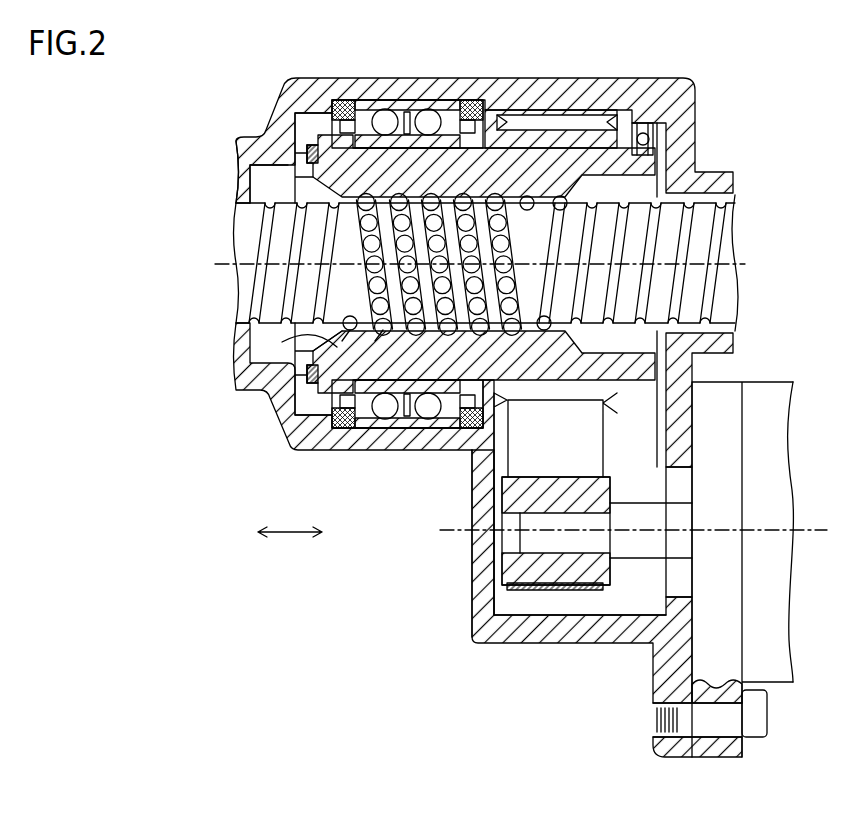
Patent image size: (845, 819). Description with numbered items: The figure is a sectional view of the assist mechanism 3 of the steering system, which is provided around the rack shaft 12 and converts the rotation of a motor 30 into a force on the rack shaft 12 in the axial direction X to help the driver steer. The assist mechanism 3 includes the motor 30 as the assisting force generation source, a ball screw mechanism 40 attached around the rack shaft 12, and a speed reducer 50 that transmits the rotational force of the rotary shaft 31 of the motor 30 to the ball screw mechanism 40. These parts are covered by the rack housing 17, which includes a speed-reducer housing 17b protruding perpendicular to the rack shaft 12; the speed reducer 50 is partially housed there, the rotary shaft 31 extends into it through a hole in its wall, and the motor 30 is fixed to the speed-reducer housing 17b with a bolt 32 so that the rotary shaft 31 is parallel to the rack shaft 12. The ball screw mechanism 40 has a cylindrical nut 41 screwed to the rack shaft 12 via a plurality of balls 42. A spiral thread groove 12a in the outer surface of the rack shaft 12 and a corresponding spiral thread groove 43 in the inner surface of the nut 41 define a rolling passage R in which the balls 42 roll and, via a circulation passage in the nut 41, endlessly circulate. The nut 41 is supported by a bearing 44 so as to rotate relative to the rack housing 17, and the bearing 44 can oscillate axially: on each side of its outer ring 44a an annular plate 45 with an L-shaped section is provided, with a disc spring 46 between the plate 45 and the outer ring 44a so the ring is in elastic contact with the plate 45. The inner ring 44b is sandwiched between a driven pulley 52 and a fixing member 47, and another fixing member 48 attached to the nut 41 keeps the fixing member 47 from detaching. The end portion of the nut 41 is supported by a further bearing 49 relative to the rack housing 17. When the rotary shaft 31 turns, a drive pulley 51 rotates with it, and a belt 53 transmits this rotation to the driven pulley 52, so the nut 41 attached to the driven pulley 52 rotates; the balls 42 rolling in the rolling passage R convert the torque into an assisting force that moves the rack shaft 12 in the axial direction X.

The assist mechanism 3 is at (723, 89).
The rack shaft 12 is at (240, 203).
The thread groove 12a is at (262, 238).
The rack housing 17 is at (236, 137).
The speed-reducer housing 17b is at (480, 598).
The motor 30 is at (797, 696).
The rotary shaft 31 is at (690, 546).
The bolt 32 is at (770, 730).
The ball screw mechanism 40 is at (303, 405).
The nut 41 is at (262, 343).
The balls 42 is at (420, 290).
The thread groove 43 is at (412, 330).
The bearing 44 is at (413, 432).
The outer ring 44a is at (386, 108).
The inner ring 44b is at (428, 205).
The plate 45 is at (470, 100).
The disc spring 46 is at (465, 102).
The fixing member 47 is at (308, 140).
The fixing member 48 is at (303, 143).
The bearing 49 is at (641, 125).
The speed reducer 50 is at (500, 452).
The drive pulley 51 is at (502, 563).
The driven pulley 52 is at (490, 135).
The belt 53 is at (502, 487).
The rolling passage R is at (345, 367).
The axial direction X is at (290, 544).